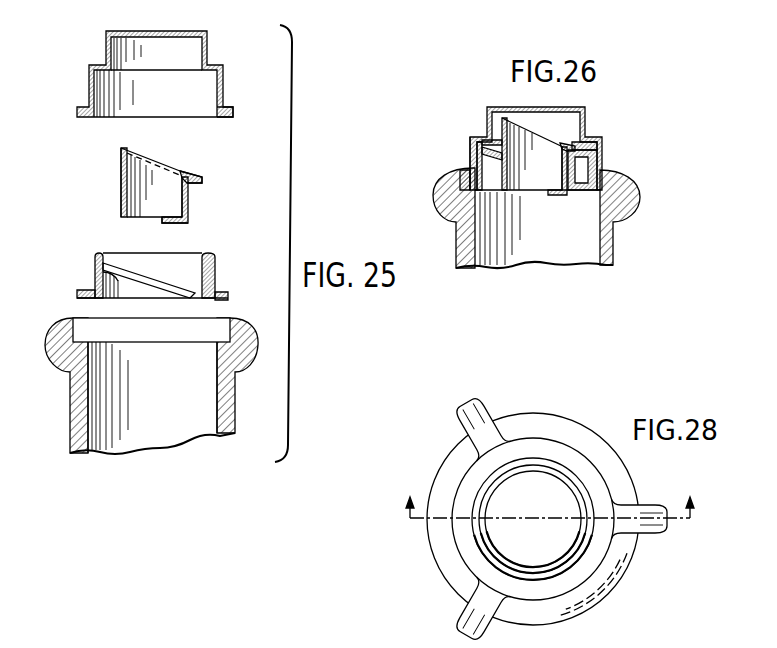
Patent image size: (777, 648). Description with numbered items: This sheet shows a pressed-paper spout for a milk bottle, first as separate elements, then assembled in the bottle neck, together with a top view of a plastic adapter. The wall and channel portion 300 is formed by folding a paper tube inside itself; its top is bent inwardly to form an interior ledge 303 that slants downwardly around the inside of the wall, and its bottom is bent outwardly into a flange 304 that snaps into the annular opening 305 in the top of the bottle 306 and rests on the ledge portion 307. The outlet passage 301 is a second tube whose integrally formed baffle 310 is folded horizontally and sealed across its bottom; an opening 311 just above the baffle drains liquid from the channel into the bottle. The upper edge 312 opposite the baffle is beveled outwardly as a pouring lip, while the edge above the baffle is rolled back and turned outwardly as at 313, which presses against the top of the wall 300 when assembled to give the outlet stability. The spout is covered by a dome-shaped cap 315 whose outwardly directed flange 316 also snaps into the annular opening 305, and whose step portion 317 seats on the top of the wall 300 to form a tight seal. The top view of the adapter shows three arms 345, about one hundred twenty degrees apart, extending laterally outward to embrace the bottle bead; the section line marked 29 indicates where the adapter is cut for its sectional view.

In FIG. 25, the wall and channel portion 300 is at (213, 263).
In FIG. 26, the wall and channel portion 300 is at (603, 161).
In FIG. 25, the outlet passage 301 is at (190, 190).
In FIG. 26, the outlet passage 301 is at (532, 137).
In FIG. 25, the interior ledge 303 is at (107, 270).
In FIG. 26, the interior ledge 303 is at (492, 153).
In FIG. 25, the flange 304 is at (223, 293).
In FIG. 26, the flange 304 is at (465, 193).
In FIG. 25, the annular opening 305 is at (97, 326).
In FIG. 25, the bottle 306 is at (110, 412).
In FIG. 26, the bottle 306 is at (536, 218).
In FIG. 25, the ledge portion 307 is at (158, 340).
In FIG. 25, the baffle 310 is at (173, 224).
In FIG. 25, the opening 311 is at (187, 202).
In FIG. 26, the opening 311 is at (534, 156).
In FIG. 25, the upper edge 312 is at (127, 152).
In FIG. 25, the outwardly turned portion 313 is at (194, 180).
In FIG. 26, the outwardly turned portion 313 is at (597, 142).
In FIG. 25, the dome-shaped cap 315 is at (184, 43).
In FIG. 26, the dome-shaped cap 315 is at (573, 123).
In FIG. 25, the outwardly directed flange 316 is at (229, 110).
In FIG. 26, the outwardly directed flange 316 is at (467, 167).
In FIG. 25, the step portion 317 is at (205, 76).
In FIG. 28, the arms 345 is at (486, 396).
In FIG. 28, the section line 29- 29 is at (552, 497).